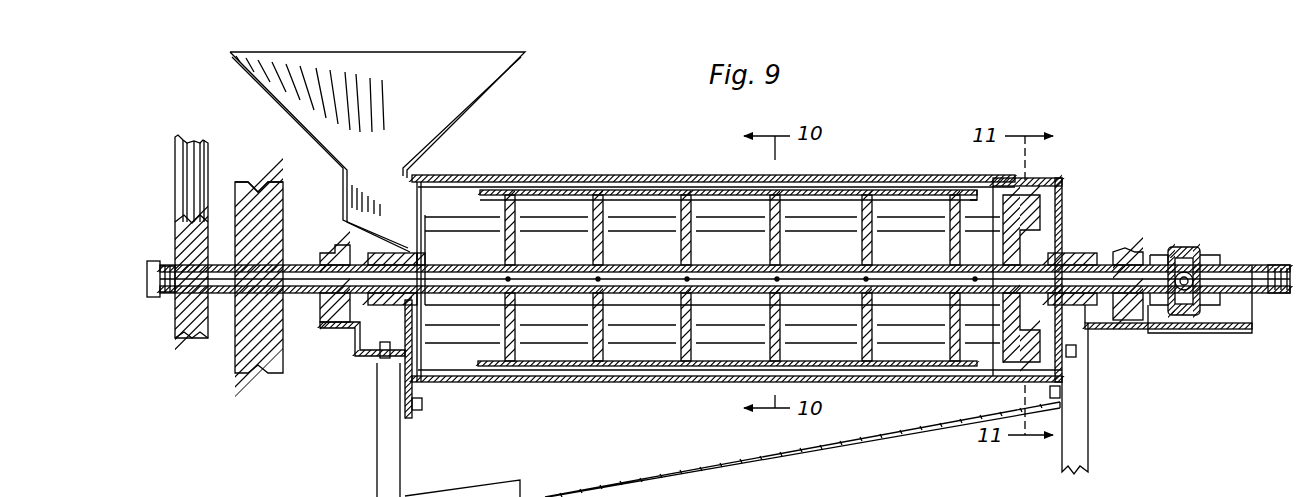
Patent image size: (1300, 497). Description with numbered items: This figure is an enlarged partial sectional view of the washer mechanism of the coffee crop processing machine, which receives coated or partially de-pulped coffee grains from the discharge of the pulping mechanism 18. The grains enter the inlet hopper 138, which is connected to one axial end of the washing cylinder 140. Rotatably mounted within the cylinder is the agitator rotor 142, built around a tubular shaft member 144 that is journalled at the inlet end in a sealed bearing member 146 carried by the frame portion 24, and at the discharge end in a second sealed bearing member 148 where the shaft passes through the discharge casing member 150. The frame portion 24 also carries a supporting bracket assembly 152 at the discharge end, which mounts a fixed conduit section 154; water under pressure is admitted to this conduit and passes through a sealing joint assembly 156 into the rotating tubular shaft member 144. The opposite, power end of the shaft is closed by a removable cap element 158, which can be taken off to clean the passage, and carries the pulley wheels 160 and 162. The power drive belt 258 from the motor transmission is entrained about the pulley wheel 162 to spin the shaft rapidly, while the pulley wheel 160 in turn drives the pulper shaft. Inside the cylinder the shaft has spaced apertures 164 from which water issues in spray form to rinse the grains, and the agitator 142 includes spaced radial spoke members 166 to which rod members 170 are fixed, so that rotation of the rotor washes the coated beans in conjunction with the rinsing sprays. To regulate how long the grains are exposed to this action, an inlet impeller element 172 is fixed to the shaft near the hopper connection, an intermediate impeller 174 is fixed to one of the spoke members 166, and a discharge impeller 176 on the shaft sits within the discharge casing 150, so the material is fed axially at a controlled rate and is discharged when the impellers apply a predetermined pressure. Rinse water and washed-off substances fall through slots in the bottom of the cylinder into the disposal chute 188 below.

The pulping mechanism 18 is at (972, 100).
The frame portion 24 is at (374, 412).
The inlet hopper 138 is at (485, 99).
The washing cylinder 140 is at (914, 174).
The agitator rotor 142 is at (631, 262).
The tubular shaft member 144 is at (794, 268).
The sealed bearing member 146 is at (391, 306).
The sealed bearing member 148 is at (1087, 253).
The discharge casing member 150 is at (1063, 212).
The supporting bracket assembly 152 is at (1168, 334).
The fixed conduit section 154 is at (1232, 264).
The sealing joint assembly 156 is at (1190, 246).
The removable cap element 158 is at (154, 297).
The pulley wheel 160 is at (190, 338).
The pulley wheel 162 is at (258, 373).
The spaced apertures 164 is at (556, 276).
The radial spoke members 166 is at (505, 232).
The rod members 170 is at (536, 190).
The inlet impeller element 172 is at (423, 254).
The intermediate impeller 174 is at (708, 212).
The discharge impeller 176 is at (1062, 182).
The disposal chute 188 is at (822, 446).
The power drive belt 258 is at (256, 183).